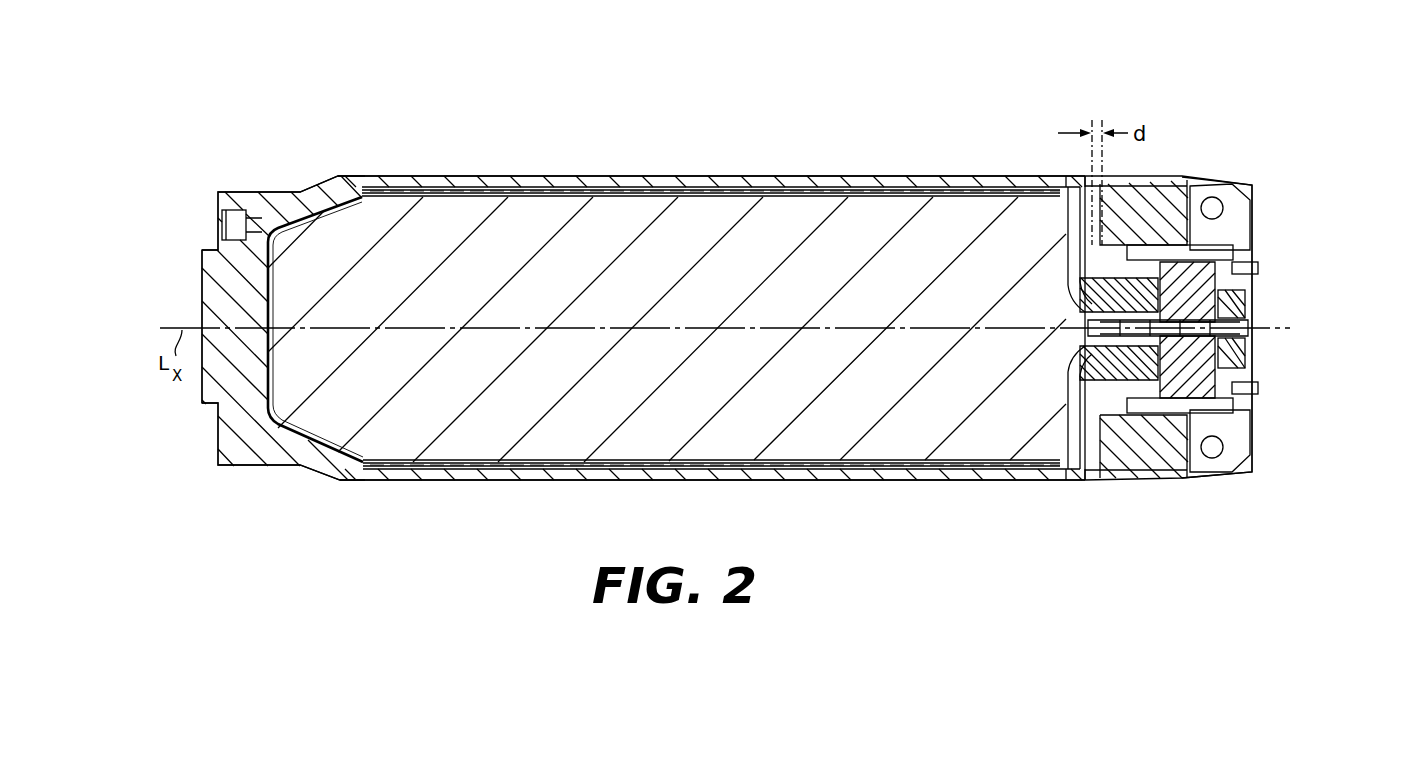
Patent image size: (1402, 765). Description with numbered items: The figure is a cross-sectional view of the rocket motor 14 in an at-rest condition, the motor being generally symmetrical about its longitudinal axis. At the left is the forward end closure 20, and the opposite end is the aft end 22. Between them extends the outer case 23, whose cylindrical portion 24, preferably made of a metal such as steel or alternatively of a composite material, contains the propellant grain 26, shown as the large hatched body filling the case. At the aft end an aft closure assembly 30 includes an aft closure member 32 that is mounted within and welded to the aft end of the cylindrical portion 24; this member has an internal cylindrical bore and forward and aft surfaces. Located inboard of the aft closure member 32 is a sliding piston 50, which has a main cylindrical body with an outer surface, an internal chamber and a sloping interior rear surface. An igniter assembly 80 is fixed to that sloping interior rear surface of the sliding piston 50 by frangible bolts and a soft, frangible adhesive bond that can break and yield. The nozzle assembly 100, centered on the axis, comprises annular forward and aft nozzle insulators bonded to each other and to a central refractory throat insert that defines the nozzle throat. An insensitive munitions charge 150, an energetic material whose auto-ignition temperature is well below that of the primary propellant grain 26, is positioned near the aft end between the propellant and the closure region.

The rocket motor 14 is at (546, 138).
The forward end closure 20 is at (170, 240).
The aft end 22 is at (1284, 250).
The outer case 23 is at (1078, 500).
The cylindrical portion 24 is at (803, 180).
The propellant grain 26 is at (650, 288).
The aft closure assembly 30 is at (1180, 500).
The aft closure member 32 is at (1182, 247).
The sliding piston 50 is at (1147, 208).
The igniter assembly 80 is at (1288, 298).
The nozzle assembly 100 is at (1088, 358).
The insensitive munitions charge 150 is at (1070, 260).